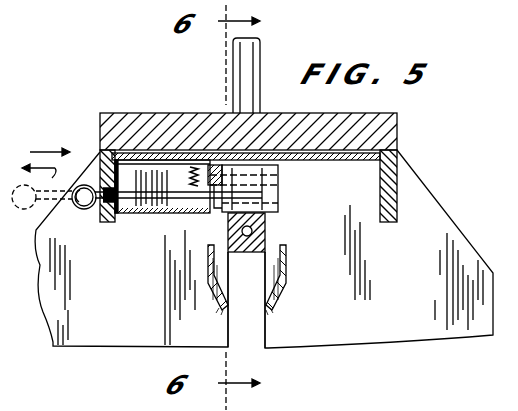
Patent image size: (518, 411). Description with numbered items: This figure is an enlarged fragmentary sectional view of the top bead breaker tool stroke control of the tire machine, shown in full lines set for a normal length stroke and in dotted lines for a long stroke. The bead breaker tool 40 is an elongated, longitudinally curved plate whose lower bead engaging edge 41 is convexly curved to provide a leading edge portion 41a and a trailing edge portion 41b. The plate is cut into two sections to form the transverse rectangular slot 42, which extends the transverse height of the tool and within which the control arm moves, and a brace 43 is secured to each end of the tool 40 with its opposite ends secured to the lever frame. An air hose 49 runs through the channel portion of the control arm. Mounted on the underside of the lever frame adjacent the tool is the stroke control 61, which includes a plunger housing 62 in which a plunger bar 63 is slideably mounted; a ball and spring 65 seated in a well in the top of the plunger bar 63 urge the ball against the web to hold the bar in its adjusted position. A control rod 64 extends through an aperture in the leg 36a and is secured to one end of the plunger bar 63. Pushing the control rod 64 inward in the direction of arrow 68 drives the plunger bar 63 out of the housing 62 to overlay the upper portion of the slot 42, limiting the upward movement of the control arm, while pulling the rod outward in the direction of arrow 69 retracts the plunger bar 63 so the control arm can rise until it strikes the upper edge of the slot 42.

The leg 36a is at (396, 165).
The bead breaker tool 40 is at (415, 192).
The lower bead engaging edge 41 is at (320, 348).
The leading edge portion 41a is at (168, 348).
The trailing edge portion 41b is at (66, 348).
The transverse rectangular slot 42 is at (267, 338).
The brace 43 is at (283, 293).
The air hose 49 is at (265, 231).
The stroke control 61 is at (148, 228).
The plunger housing 62 is at (175, 215).
The plunger bar 63 is at (276, 206).
The control rod 64 is at (86, 209).
The ball and spring 65 is at (195, 185).
The arrow 68 is at (46, 152).
The arrow 69 is at (52, 178).